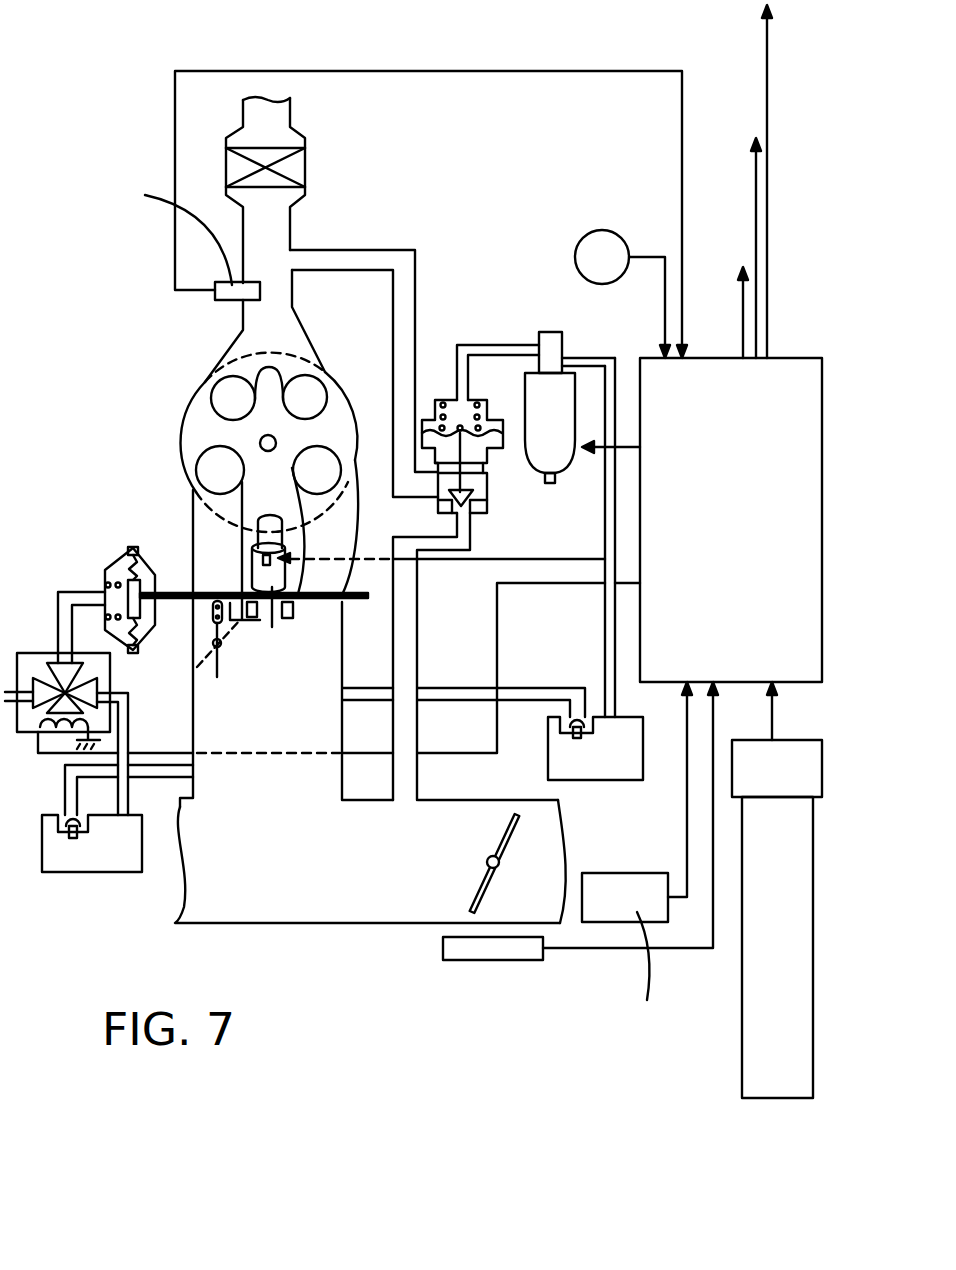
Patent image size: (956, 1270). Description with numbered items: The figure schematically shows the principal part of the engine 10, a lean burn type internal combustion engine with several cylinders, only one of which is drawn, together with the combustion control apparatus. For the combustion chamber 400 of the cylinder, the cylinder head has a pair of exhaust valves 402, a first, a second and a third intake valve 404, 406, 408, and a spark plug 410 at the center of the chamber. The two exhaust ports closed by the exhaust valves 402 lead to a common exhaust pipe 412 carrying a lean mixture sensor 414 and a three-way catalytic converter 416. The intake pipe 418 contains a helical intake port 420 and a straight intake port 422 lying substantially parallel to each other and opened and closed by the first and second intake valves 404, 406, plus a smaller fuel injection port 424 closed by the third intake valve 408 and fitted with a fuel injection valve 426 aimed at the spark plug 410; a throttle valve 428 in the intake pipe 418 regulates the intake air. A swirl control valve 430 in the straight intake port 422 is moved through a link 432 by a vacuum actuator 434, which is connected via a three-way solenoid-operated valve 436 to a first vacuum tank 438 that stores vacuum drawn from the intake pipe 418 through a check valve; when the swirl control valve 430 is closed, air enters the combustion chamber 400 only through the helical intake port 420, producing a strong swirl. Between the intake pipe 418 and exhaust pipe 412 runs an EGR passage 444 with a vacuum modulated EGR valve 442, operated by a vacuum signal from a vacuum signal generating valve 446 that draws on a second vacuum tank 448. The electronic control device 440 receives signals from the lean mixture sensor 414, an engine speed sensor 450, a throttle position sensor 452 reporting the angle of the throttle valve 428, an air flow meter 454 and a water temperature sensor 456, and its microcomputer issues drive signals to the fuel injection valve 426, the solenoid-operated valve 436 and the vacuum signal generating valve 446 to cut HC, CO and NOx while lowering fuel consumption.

The engine 10 is at (103, 330).
The combustion chamber 400 is at (202, 437).
The exhaust valves 402 is at (358, 346).
The first intake valve 404 is at (323, 458).
The second intake valve 406 is at (203, 468).
The third intake valve 408 is at (260, 515).
The spark plug 410 is at (276, 440).
The exhaust pipe 412 is at (282, 227).
The lean mixture sensor 414 is at (225, 300).
The three-way catalytic converter 416 is at (297, 170).
The intake pipe 418 is at (373, 907).
The helical intake port 420 is at (364, 513).
The straight intake port 422 is at (207, 547).
The fuel injection port 424 is at (258, 537).
The fuel injection valve 426 is at (272, 590).
The throttle valve 428 is at (510, 828).
The swirl control valve 430 is at (222, 675).
The link 432 is at (175, 599).
The vacuum actuator 434 is at (105, 573).
The three-way solenoid-operated valve 436 is at (28, 733).
The first vacuum tank 438 is at (100, 863).
The electronic control device 440 is at (793, 372).
The EGR valve 442 is at (480, 490).
The EGR passage 444 is at (415, 288).
The vacuum signal generating valve 446 is at (538, 456).
The second vacuum tank 448 is at (617, 781).
The engine speed sensor 450 is at (602, 243).
The throttle position sensor 452 is at (473, 961).
The air flow meter 454 is at (617, 900).
The water temperature sensor 456 is at (773, 1099).